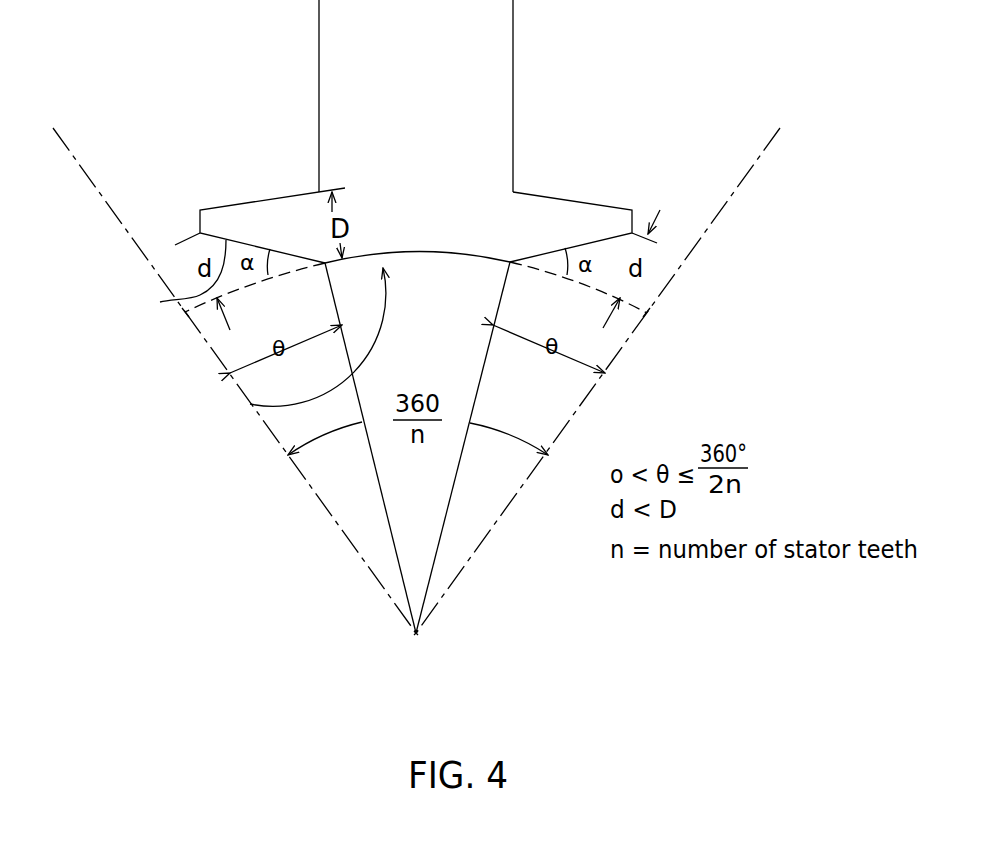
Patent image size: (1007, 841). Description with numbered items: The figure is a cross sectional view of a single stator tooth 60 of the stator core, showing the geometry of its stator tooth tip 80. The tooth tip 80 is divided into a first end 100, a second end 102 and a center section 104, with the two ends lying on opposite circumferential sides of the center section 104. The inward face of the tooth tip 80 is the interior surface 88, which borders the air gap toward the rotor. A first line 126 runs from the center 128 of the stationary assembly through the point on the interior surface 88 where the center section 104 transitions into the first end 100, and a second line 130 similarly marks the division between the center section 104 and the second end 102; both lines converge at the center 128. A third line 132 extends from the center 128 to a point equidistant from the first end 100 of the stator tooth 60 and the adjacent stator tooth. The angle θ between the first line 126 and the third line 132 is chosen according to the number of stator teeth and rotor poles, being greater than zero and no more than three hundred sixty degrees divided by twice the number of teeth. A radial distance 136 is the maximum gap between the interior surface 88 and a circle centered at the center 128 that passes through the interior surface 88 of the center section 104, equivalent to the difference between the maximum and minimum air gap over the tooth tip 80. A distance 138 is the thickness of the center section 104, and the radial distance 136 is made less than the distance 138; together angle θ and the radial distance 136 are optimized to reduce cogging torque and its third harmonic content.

The stator tooth 60 is at (430, 48).
The stator tooth tip 80 is at (433, 253).
The interior surface 88 is at (160, 302).
The first end 100 is at (252, 193).
The second end 102 is at (600, 200).
The center section 104 is at (250, 404).
The first line 126 is at (378, 490).
The center 128 is at (416, 633).
The second line 130 is at (453, 488).
The third line 132 is at (103, 200).
The radial distance 136 is at (189, 237).
The distance 138 is at (337, 210).